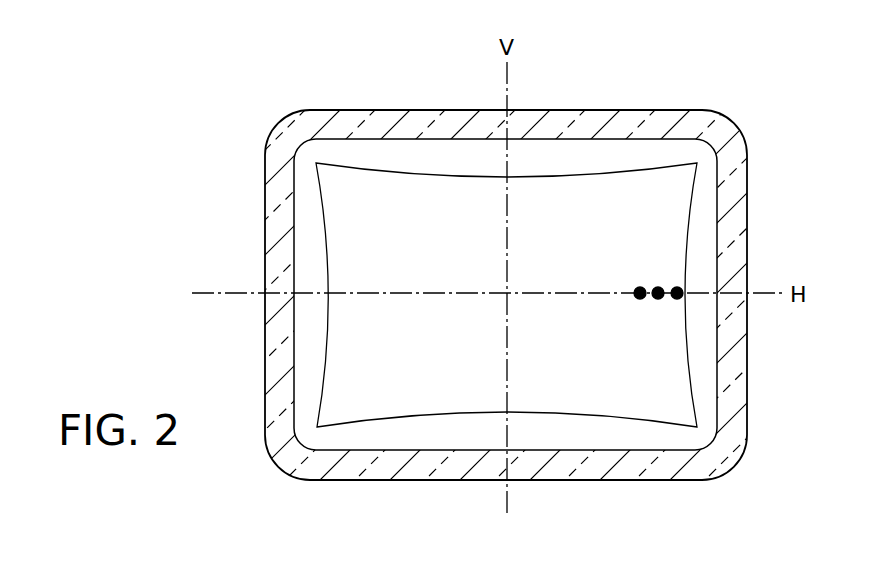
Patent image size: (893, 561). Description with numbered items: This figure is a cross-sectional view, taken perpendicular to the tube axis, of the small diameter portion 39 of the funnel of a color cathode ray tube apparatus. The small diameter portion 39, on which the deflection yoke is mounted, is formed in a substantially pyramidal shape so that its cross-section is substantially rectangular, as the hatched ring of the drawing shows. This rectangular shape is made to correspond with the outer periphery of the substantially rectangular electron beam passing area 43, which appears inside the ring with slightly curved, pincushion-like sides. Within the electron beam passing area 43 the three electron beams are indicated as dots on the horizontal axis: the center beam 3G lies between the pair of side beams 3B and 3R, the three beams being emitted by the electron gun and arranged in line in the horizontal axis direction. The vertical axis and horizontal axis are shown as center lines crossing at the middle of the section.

The small diameter portion 39 is at (638, 108).
The electron beam passing area 43 is at (688, 228).
The side beam 3R is at (637, 287).
The center beam 3G is at (656, 300).
The side beam 3B is at (676, 287).